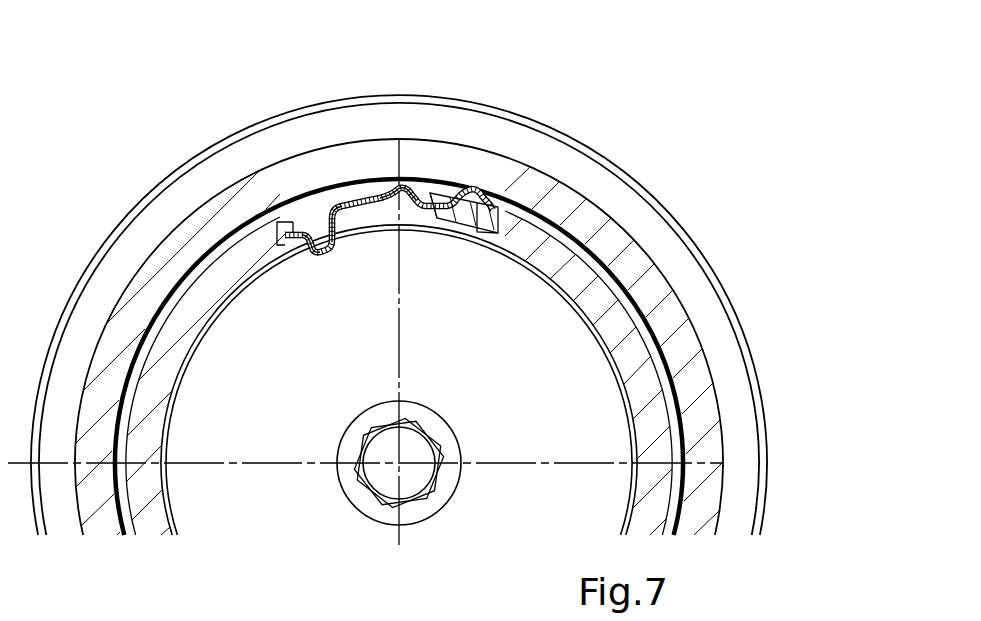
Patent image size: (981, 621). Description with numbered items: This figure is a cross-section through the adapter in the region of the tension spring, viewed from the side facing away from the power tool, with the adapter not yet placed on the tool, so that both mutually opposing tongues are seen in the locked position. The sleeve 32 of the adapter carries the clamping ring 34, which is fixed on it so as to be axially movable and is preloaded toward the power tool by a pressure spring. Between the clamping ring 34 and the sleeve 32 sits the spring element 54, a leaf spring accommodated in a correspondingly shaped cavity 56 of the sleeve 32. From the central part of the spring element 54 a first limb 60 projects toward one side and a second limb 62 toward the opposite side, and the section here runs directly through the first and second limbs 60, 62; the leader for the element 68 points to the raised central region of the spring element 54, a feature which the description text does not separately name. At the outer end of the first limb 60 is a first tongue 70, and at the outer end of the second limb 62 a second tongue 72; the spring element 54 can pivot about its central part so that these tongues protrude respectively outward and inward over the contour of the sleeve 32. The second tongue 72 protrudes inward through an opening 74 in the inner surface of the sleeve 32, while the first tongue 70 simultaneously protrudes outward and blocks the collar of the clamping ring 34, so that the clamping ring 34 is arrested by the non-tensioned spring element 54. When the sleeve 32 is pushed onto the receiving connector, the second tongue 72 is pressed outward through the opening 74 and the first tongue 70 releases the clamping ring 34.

The sleeve 32 is at (552, 251).
The clamping ring 34 is at (487, 202).
The spring element 54 is at (414, 178).
The cavity 56 is at (458, 238).
The first limb 60 is at (440, 236).
The second limb 62 is at (345, 215).
The spring bump 68 is at (392, 185).
The first tongue 70 is at (445, 197).
The second tongue 72 is at (320, 258).
The opening 74 is at (295, 252).